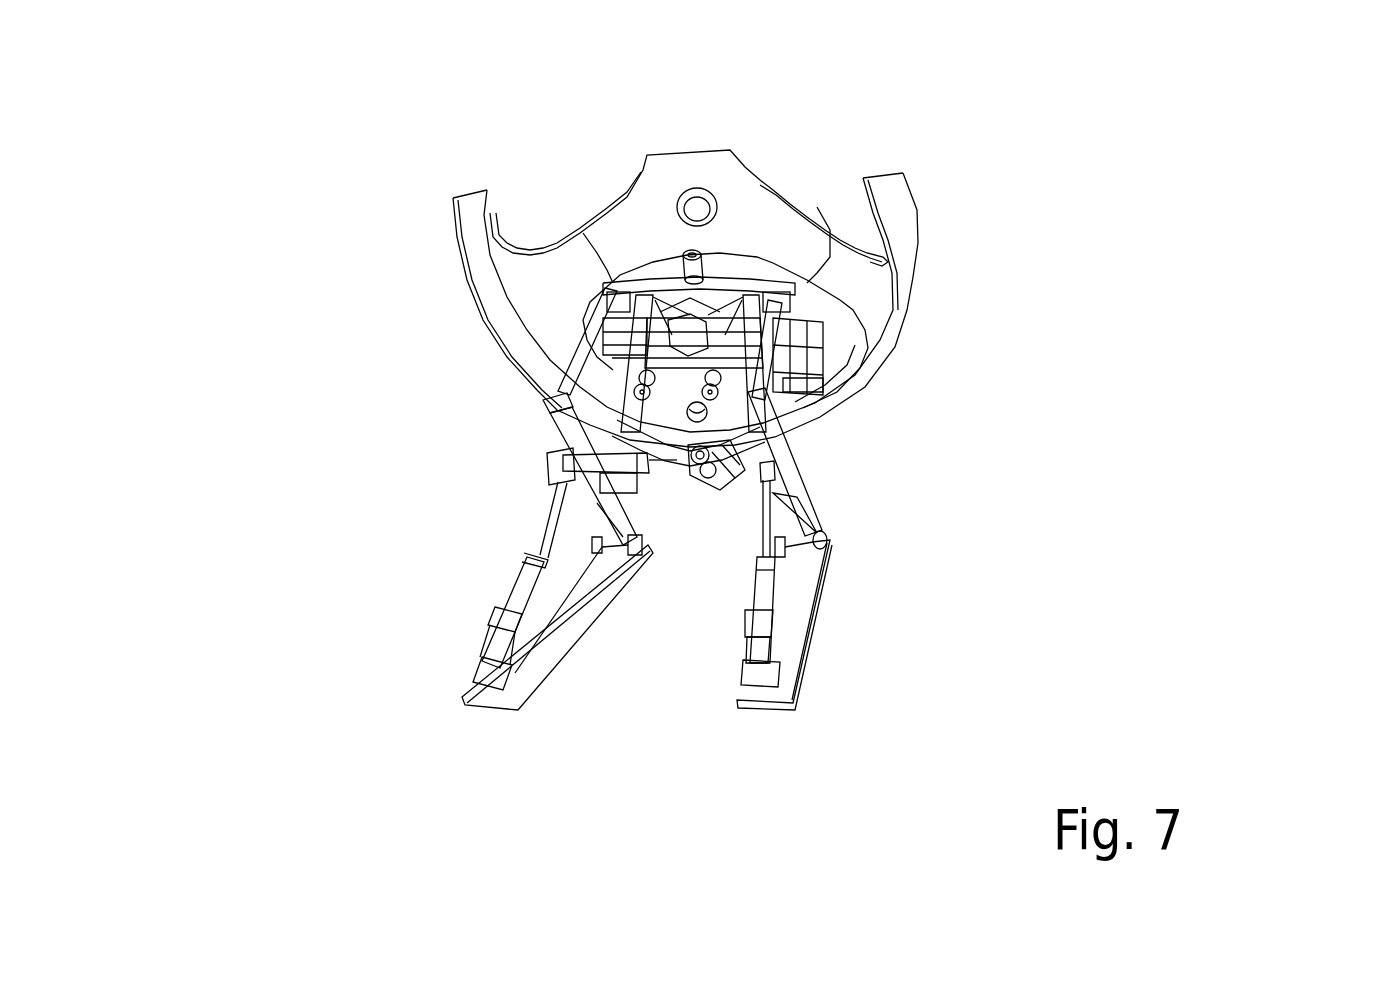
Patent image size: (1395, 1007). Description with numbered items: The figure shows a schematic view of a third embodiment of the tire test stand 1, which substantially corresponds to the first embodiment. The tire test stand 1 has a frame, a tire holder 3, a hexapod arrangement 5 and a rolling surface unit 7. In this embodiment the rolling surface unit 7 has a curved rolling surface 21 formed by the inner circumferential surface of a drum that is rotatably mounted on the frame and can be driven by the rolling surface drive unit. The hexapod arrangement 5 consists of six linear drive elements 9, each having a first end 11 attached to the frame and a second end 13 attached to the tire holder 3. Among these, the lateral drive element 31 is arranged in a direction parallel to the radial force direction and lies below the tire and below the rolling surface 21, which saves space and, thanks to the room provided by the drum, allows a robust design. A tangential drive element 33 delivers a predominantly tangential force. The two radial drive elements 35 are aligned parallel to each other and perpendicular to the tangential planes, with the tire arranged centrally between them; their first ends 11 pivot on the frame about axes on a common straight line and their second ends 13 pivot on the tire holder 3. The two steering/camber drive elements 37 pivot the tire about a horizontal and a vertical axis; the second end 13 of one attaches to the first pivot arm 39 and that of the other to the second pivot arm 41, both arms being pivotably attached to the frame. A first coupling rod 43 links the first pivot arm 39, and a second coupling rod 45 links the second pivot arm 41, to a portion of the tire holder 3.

The tire test stand 1 is at (1093, 85).
The tire holder 3 is at (894, 371).
The hexapod arrangement 5 is at (1238, 496).
The rolling surface unit 7 is at (919, 209).
The linear drive elements 9 is at (639, 572).
The first end 11 is at (750, 562).
The second end 13 is at (780, 503).
The rolling surface 21 is at (530, 280).
The lateral drive element 31 is at (710, 629).
The tangential drive element 33 is at (583, 690).
The radial drive elements 35 is at (786, 319).
The steering/camber drive elements 37 is at (639, 572).
The first pivot arm 39 is at (432, 416).
The second pivot arm 41 is at (947, 418).
The first coupling rod 43 is at (577, 327).
The second coupling rod 45 is at (787, 172).